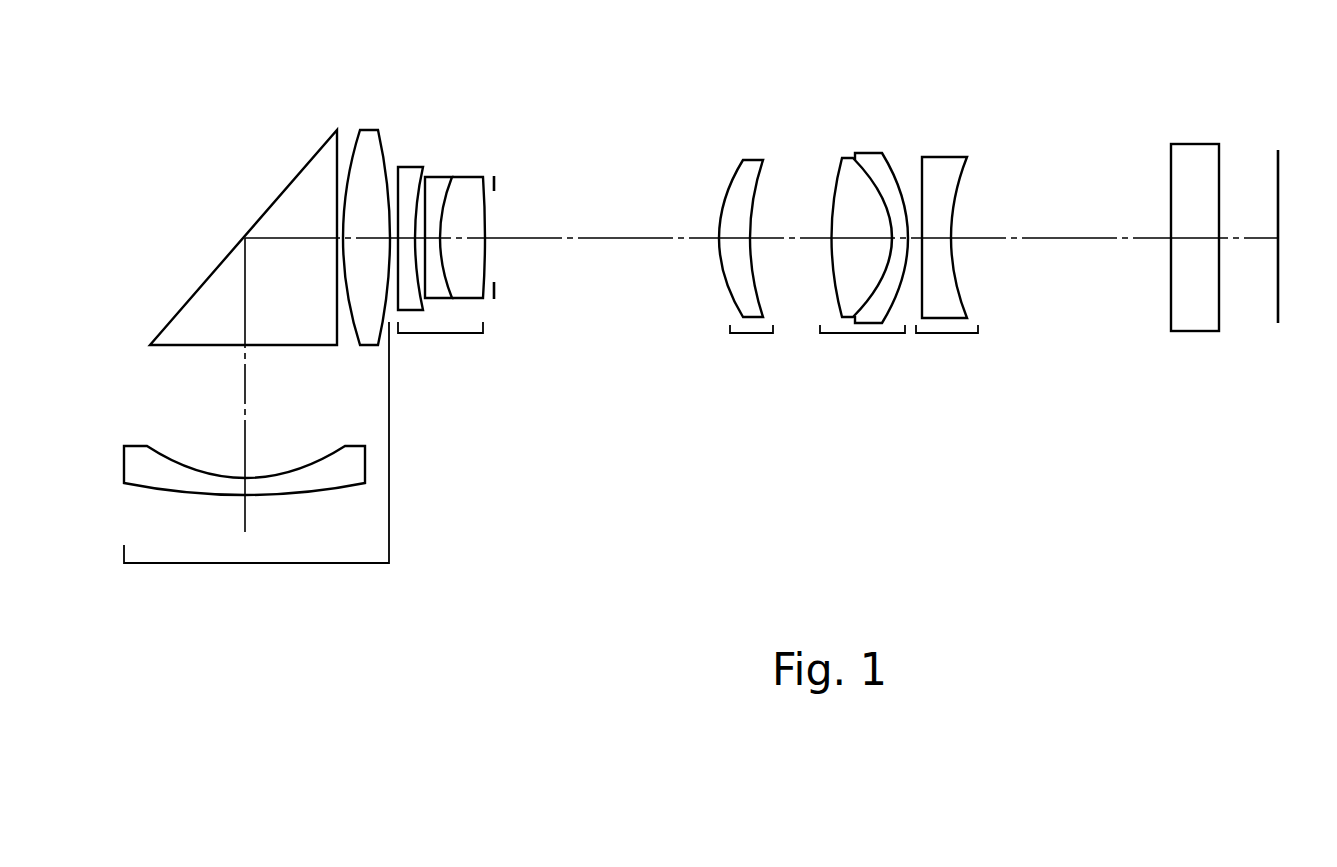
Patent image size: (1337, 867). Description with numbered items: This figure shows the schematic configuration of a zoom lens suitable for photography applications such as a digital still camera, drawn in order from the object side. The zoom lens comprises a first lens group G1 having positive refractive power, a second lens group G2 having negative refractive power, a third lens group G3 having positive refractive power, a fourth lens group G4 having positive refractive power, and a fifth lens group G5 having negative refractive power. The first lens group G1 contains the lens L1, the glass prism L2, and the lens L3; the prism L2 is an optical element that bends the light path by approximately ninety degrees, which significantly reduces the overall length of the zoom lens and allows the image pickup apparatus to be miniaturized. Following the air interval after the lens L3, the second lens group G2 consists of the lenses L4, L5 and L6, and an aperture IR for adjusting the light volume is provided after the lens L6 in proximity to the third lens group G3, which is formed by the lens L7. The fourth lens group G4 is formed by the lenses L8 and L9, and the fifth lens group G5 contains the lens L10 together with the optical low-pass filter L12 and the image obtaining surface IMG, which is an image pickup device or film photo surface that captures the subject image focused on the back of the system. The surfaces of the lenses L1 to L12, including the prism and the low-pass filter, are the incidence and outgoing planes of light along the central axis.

The lens L1 is at (185, 492).
The glass prism L2 is at (322, 143).
The lens L3 is at (368, 128).
The lens L4 is at (412, 167).
The lens L5 is at (439, 177).
The lens L6 is at (465, 177).
The aperture IR is at (496, 183).
The lens L7 is at (754, 160).
The lens L8 is at (848, 158).
The lens L9 is at (868, 153).
The lens L10 is at (947, 157).
The optical low-pass filter L12 is at (1196, 144).
The image obtaining surface IMG is at (1279, 150).
The first lens group G1 is at (256, 459).
The second lens group G2 is at (440, 345).
The third lens group G3 is at (751, 346).
The fourth lens group G4 is at (862, 346).
The fifth lens group G5 is at (947, 346).